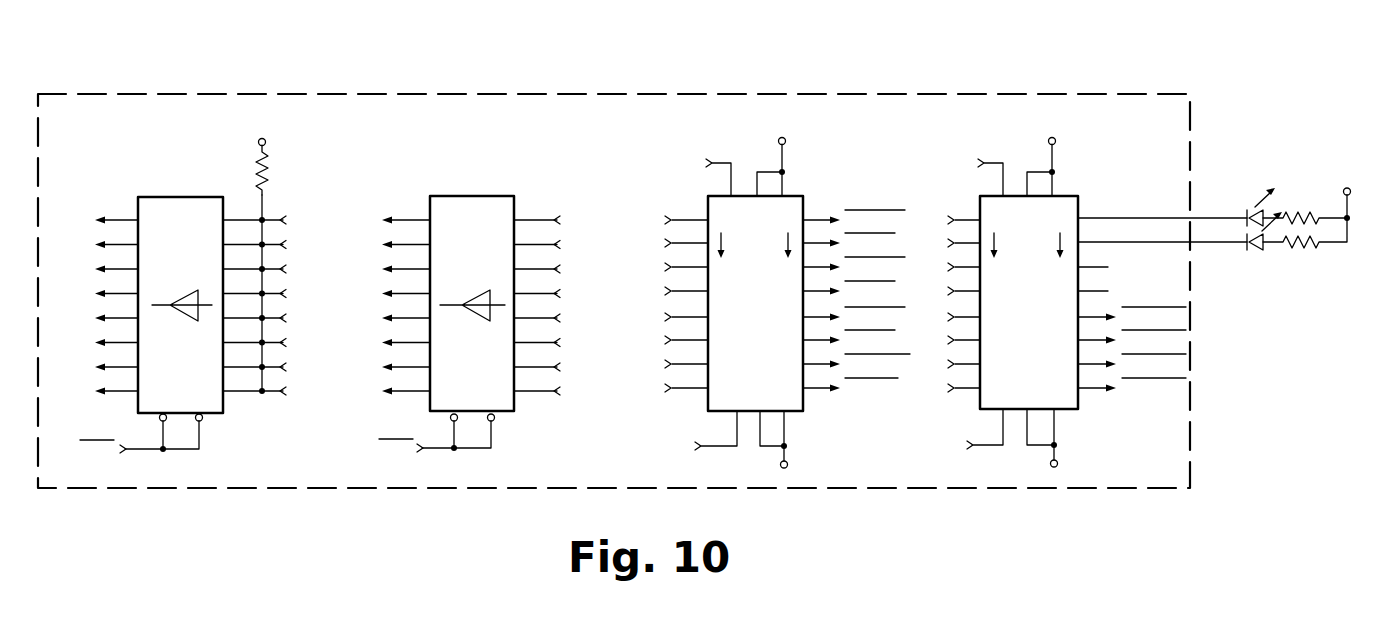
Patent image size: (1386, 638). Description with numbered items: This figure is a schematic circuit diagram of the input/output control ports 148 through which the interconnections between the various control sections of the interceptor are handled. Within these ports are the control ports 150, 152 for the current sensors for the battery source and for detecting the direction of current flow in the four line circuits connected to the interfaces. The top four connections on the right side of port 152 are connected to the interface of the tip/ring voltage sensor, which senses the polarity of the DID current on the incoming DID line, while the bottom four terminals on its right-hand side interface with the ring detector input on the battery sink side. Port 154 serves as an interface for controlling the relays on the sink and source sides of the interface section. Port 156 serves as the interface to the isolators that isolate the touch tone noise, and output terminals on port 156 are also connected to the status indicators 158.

The input/output control ports 148 is at (1132, 94).
The control port 150 is at (223, 413).
The control port 152 is at (514, 411).
The port 154 is at (805, 400).
The port 156 is at (1080, 398).
The status indicators 158 is at (1306, 191).